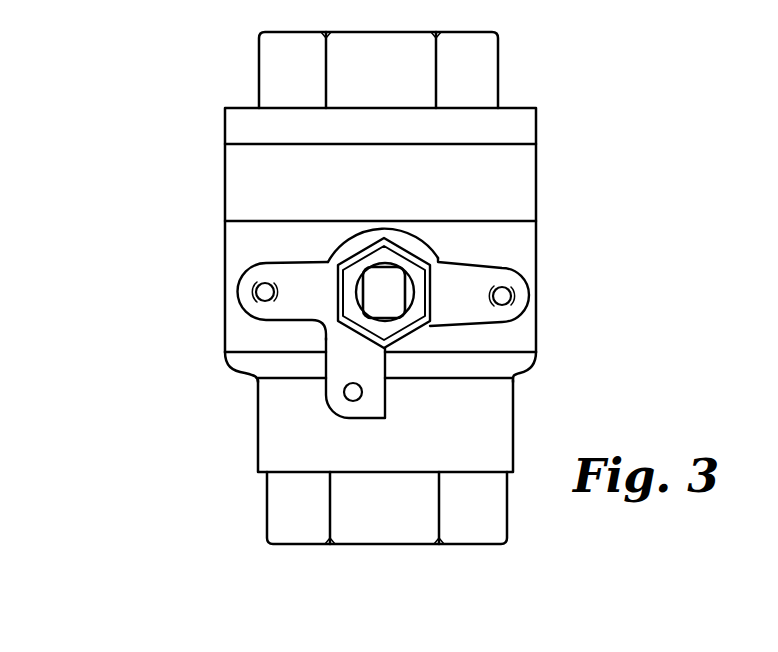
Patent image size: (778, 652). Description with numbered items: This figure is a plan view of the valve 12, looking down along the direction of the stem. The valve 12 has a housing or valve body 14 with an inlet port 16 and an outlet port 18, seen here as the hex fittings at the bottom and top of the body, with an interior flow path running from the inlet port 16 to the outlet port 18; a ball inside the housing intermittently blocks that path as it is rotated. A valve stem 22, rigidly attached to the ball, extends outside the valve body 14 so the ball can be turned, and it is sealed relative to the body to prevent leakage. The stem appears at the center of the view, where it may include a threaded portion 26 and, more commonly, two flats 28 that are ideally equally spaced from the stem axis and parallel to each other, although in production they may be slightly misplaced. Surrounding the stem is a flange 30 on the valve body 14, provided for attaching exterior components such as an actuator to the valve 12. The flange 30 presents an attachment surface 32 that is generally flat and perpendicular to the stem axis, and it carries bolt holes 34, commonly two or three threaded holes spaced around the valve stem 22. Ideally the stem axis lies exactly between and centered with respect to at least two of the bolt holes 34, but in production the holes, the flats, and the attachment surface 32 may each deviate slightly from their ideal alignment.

The valve 12 is at (124, 183).
The valve body 14 is at (518, 163).
The inlet port 16 is at (415, 545).
The outlet port 18 is at (383, 31).
The valve stem 22 is at (388, 282).
The threaded portion 26 is at (360, 327).
The flat 28 is at (358, 288).
The flange 30 is at (268, 322).
The attachment surface 32 is at (472, 278).
The bolt hole 34 is at (255, 291).